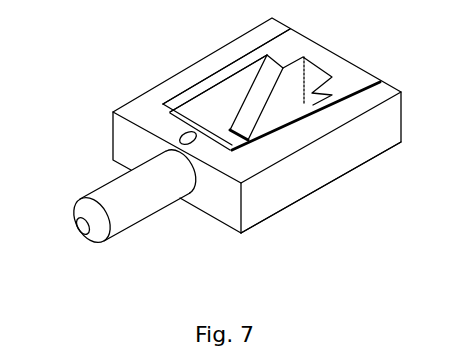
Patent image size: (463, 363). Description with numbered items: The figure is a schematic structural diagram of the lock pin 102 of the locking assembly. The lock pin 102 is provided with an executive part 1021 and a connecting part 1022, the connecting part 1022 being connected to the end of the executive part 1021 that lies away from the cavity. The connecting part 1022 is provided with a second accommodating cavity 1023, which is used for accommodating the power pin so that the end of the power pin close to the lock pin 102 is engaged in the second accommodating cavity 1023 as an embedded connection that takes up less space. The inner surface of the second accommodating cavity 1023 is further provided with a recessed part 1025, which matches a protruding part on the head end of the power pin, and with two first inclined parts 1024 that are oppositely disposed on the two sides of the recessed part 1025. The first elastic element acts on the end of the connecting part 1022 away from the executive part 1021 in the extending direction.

The lock pin 102 is at (436, 266).
The executive part 1021 is at (127, 192).
The connecting part 1022 is at (366, 134).
The second accommodating cavity 1023 is at (193, 103).
The first inclined parts 1024 is at (255, 80).
The recessed part 1025 is at (305, 56).